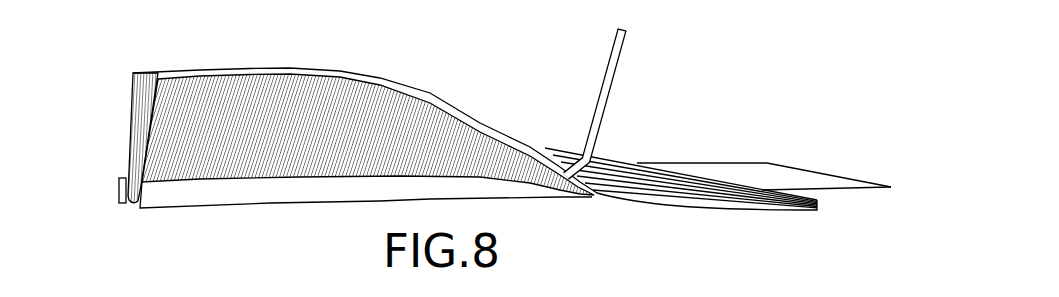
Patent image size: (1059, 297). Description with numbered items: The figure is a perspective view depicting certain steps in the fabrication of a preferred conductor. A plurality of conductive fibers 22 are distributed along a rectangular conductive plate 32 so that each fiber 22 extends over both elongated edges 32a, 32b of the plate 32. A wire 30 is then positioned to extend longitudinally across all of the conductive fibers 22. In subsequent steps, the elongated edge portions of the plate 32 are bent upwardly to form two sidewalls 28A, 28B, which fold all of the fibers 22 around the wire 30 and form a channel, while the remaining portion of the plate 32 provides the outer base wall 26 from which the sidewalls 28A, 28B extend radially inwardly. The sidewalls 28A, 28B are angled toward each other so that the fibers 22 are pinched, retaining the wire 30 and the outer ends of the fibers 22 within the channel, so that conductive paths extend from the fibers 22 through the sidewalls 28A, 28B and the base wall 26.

The conductive fibers 22 is at (298, 75).
The outer base wall 26 is at (122, 208).
The sidewall 28A is at (123, 190).
The sidewall 28B is at (190, 197).
The wire 30 is at (612, 72).
The rectangular conductive plate 32 is at (764, 179).
The elongated edge of plate 32a is at (730, 162).
The elongated edge of plate 32b is at (832, 193).